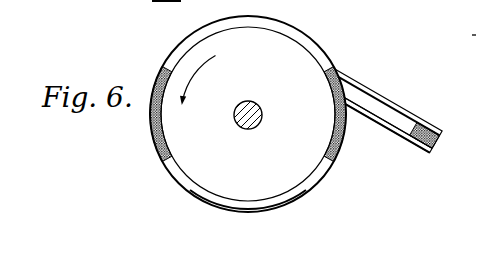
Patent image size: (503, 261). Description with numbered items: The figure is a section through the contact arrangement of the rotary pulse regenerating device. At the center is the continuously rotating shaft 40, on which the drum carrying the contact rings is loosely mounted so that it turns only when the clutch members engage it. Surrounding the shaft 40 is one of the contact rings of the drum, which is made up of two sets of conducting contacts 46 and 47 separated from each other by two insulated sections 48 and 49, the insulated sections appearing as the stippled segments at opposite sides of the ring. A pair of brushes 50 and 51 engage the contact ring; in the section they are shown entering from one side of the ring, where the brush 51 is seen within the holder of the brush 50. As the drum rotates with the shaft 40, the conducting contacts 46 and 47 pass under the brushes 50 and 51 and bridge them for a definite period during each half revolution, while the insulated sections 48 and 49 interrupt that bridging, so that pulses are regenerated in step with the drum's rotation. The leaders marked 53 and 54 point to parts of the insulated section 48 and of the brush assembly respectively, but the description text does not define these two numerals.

The shaft 40 is at (261, 110).
The conducting contacts 46 is at (268, 18).
The conducting contacts 47 is at (256, 211).
The insulated section 48 is at (156, 148).
The insulated section 49 is at (336, 158).
The brush 50 is at (392, 102).
The brush 51 is at (394, 131).
The segment lining 53 is at (150, 110).
The arm wall 54 is at (344, 117).